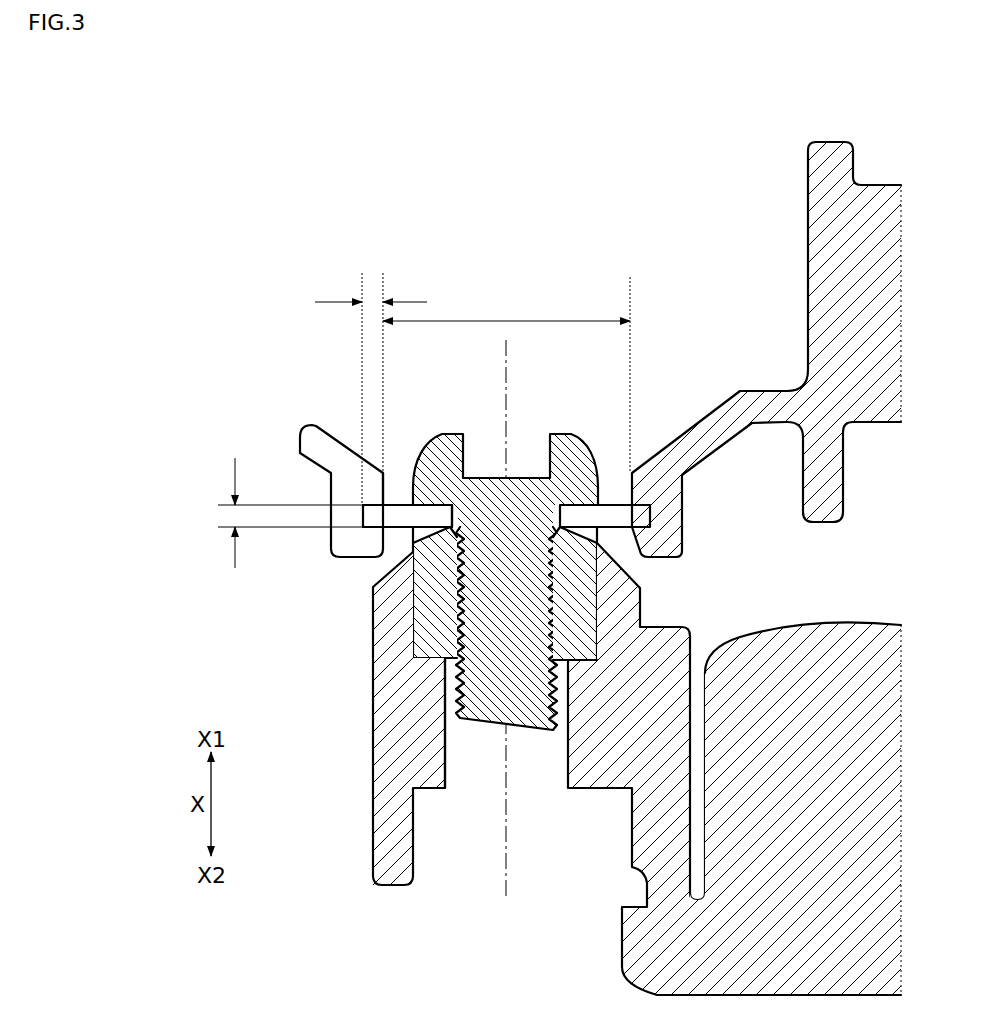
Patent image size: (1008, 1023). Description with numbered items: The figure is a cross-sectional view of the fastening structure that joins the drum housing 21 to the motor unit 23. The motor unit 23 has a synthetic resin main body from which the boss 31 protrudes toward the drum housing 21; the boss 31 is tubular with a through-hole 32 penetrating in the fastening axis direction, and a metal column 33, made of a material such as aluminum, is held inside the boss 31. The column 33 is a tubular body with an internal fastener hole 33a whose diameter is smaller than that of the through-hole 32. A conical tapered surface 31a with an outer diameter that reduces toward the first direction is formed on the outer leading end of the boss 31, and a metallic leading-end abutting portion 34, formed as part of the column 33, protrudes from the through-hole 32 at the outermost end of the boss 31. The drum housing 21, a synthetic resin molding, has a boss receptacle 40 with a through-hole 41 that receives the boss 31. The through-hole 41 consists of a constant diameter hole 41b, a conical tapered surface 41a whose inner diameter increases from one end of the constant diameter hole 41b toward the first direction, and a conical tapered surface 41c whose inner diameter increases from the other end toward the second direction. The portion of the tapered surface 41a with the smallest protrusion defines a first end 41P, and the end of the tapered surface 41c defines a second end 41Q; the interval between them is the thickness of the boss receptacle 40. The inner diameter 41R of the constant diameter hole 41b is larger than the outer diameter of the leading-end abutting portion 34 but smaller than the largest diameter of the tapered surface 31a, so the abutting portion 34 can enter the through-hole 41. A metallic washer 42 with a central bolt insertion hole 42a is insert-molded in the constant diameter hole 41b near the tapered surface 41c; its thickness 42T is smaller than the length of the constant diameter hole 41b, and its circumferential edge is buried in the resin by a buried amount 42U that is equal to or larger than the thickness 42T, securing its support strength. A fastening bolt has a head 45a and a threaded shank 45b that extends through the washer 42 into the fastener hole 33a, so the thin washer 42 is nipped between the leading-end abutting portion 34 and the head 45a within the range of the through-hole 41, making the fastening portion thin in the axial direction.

The drum housing 21 is at (801, 181).
The motor unit 23 is at (833, 617).
The boss 31 is at (370, 827).
The tapered surface 31a is at (598, 555).
The through-hole 32 is at (445, 756).
The column 33 is at (437, 622).
The fastener hole 33a is at (458, 640).
The leading-end abutting portion 34 is at (590, 541).
The boss receptacle 40 is at (691, 518).
The through-hole 41 is at (612, 470).
The tapered surface 41a is at (343, 440).
The constant diameter hole 41b is at (383, 493).
The tapered surface 41c is at (390, 564).
The first end 41P is at (330, 422).
The second end 41Q is at (388, 546).
The inner diameter 41R is at (506, 375).
The washer 42 is at (590, 512).
The bolt insertion hole 42a is at (453, 515).
The thickness 42T is at (266, 513).
The buried amount 42U is at (371, 377).
The head 45a is at (453, 440).
The shank 45b is at (522, 710).